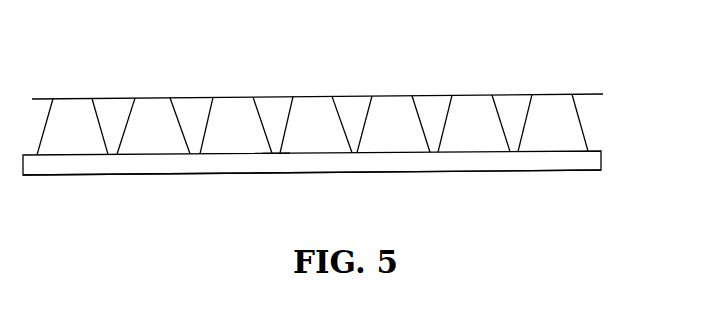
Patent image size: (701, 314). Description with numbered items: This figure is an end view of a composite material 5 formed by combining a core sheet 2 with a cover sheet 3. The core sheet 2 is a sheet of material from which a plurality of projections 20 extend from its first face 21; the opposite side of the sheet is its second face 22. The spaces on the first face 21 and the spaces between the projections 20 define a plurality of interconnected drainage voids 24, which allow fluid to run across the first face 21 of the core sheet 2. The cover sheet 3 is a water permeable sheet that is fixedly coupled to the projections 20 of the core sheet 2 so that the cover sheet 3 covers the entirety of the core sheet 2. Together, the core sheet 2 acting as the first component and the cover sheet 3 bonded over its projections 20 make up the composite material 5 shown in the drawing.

The core sheet 2 is at (191, 165).
The cover sheet 3 is at (427, 97).
The composite material 5 is at (514, 210).
The projections 20 is at (208, 115).
The first face 21 is at (273, 153).
The second face 22 is at (353, 172).
The drainage voids 24 is at (113, 138).